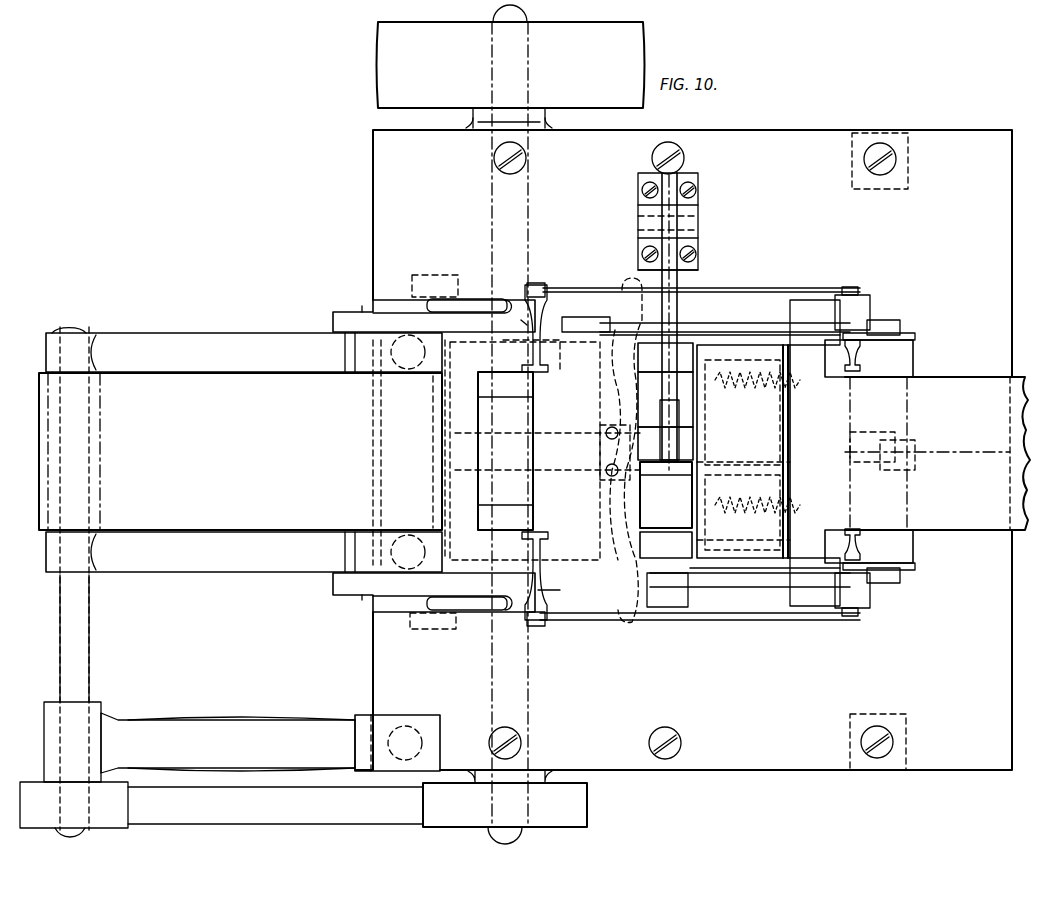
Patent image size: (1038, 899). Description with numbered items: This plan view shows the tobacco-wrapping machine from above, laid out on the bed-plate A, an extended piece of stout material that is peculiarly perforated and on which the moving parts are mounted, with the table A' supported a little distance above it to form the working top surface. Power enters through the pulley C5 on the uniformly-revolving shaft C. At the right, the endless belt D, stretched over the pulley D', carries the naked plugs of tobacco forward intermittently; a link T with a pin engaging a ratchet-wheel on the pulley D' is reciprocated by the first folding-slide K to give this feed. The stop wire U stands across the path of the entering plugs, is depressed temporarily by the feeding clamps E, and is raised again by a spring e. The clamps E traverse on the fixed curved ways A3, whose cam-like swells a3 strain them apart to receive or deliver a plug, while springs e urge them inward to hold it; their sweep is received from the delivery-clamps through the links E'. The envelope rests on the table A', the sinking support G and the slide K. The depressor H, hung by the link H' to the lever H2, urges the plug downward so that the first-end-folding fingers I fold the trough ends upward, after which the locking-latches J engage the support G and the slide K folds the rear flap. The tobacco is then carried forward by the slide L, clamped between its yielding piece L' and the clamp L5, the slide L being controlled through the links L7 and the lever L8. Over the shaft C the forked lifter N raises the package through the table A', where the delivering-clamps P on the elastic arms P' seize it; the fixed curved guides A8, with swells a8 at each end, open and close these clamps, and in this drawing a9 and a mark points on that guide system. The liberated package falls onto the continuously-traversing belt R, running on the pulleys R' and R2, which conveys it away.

The bed-plate A is at (683, 424).
The pulley C5 is at (511, 66).
The shaft C is at (505, 813).
The belt R is at (240, 450).
The pulley R' is at (80, 578).
The pulley R2 is at (392, 552).
The fixed curved guides A8 is at (434, 455).
The notch a9 is at (354, 443).
The lifter N is at (505, 451).
The table A' is at (643, 450).
The yielding piece L' is at (533, 328).
The slide L is at (654, 451).
The pin a is at (518, 321).
The clamp L5 is at (606, 428).
The delivering-clamps P is at (536, 576).
The arms P' is at (536, 602).
The swells a8 is at (520, 580).
The locking-latches J is at (626, 450).
The lever H2 is at (680, 277).
The first-end-folding fingers I is at (665, 450).
The link H' is at (665, 416).
The depressor H is at (665, 443).
The sinking support G is at (666, 495).
The first folding-slide K is at (743, 501).
The links E' is at (693, 457).
The fixed curved ways A3 is at (706, 451).
The stop wire U is at (790, 338).
The swells a3 is at (754, 442).
The springs e is at (870, 325).
The link T is at (915, 337).
The feeding clamps E is at (858, 450).
The pulley D' is at (869, 451).
The endless belt D is at (937, 453).
The links L7 is at (872, 436).
The lever L8 is at (900, 453).